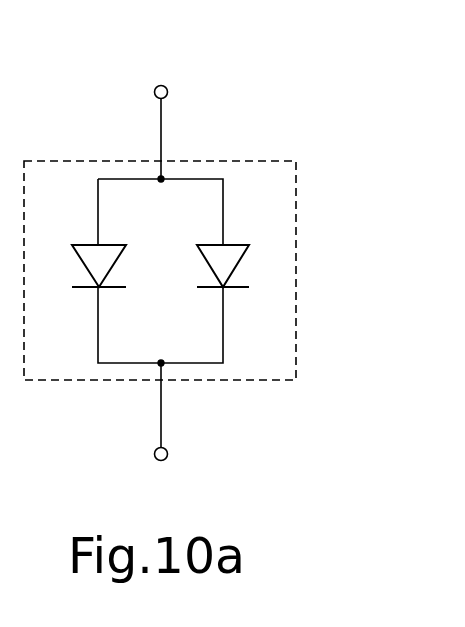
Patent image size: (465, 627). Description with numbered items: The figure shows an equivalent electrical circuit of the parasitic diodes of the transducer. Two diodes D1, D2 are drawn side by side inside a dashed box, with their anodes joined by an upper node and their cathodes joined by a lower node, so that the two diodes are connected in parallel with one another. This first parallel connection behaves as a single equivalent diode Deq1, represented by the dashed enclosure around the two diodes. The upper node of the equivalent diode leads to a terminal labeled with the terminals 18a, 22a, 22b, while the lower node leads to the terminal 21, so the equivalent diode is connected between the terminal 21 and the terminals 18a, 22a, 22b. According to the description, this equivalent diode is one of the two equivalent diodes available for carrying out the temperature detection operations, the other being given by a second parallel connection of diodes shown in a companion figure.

The terminal 18a is at (241, 105).
The terminal 22a is at (241, 105).
The terminal 22b is at (162, 85).
The terminal 21 is at (168, 448).
The equivalent diode Deq1 is at (164, 244).
The diode D1 is at (80, 258).
The diode D2 is at (234, 237).